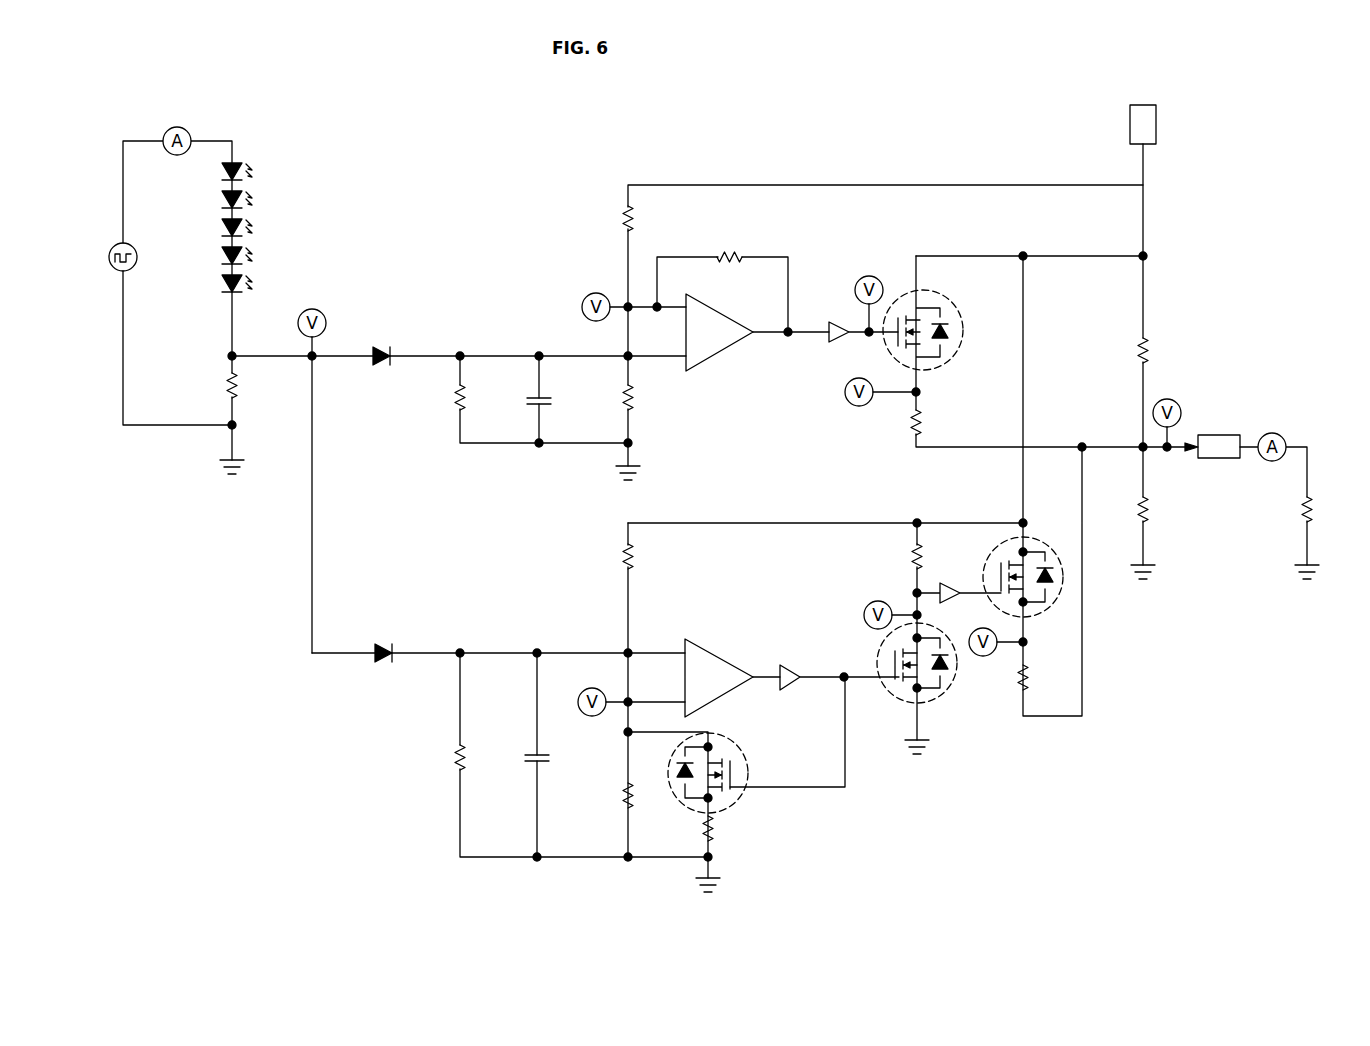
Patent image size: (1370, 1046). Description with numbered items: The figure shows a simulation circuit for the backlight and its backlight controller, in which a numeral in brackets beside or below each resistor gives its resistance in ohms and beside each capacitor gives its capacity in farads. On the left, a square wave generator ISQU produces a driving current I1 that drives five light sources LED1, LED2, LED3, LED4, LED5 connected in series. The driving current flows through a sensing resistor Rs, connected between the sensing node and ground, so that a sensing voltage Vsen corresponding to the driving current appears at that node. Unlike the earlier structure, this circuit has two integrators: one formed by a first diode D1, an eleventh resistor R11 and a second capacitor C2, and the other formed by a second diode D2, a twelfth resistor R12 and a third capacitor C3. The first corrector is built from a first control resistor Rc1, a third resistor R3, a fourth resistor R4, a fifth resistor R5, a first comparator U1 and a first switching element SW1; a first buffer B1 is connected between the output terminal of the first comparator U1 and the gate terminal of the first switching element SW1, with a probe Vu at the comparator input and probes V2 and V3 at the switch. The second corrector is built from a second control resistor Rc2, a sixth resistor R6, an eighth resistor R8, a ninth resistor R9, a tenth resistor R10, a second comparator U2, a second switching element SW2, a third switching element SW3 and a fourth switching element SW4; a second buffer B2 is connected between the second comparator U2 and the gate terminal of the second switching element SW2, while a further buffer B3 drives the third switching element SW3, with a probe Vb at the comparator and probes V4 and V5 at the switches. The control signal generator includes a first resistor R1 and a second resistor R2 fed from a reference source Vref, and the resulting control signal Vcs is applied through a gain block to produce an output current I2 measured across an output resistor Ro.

The driving current I1 is at (180, 131).
The square wave generator ISQU is at (146, 257).
The light source LED1 is at (267, 173).
The light source LED2 is at (267, 201).
The light source LED3 is at (267, 229).
The light source LED4 is at (267, 257).
The light source LED5 is at (267, 285).
The sensing resistor Rs is at (258, 415).
The sensing voltage Vsen is at (328, 481).
The first diode D1 is at (382, 366).
The second diode D2 is at (382, 665).
The eleventh resistor R11 is at (510, 399).
The second capacitor C2 is at (509, 399).
The fourth resistor R4 is at (656, 418).
The third resistor R3 is at (589, 225).
The reference voltage source Vref is at (1177, 221).
The voltage meter Vu is at (634, 302).
The fifth resistor R5 is at (726, 278).
The first comparator U1 is at (718, 352).
The first buffer B1 is at (838, 345).
The voltage meter V2 is at (876, 293).
The first switching element SW1 is at (946, 300).
The voltage meter V3 is at (880, 398).
The first control resistor Rc1 is at (1039, 419).
The first resistor R1 is at (1187, 417).
The second resistor R2 is at (1169, 538).
The control voltage gain block Vcs is at (1196, 428).
The ammeter I2 is at (1273, 453).
The output resistor Ro is at (1288, 538).
The sixth resistor R6 is at (673, 690).
The twelfth resistor R12 is at (549, 755).
The third capacitor C3 is at (508, 755).
The voltage meter Vb is at (631, 693).
The second comparator U2 is at (718, 652).
The second buffer B2 is at (790, 662).
The eighth resistor R8 is at (899, 638).
The buffer B3 is at (950, 580).
The voltage meter V4 is at (880, 608).
The second switching element SW2 is at (937, 702).
The third switching element SW3 is at (1058, 598).
The voltage meter V5 is at (1010, 642).
The second control resistor Rc2 is at (990, 688).
The fourth switching element SW4 is at (738, 758).
The tenth resistor R10 is at (752, 854).
The ninth resistor R9 is at (589, 807).